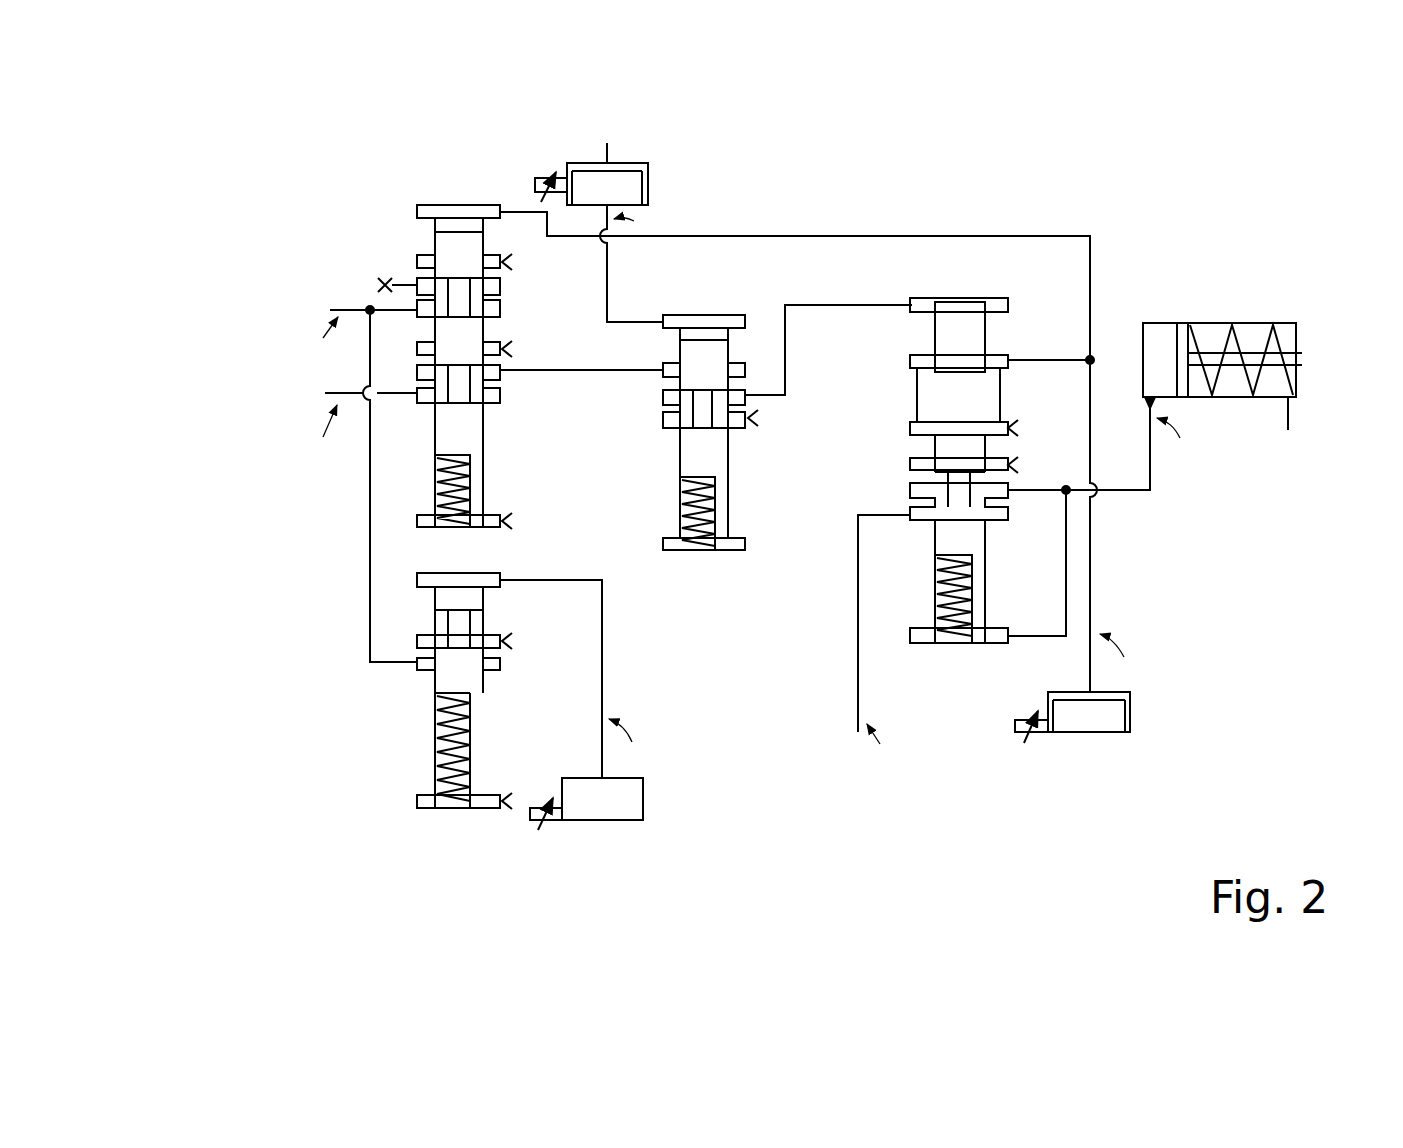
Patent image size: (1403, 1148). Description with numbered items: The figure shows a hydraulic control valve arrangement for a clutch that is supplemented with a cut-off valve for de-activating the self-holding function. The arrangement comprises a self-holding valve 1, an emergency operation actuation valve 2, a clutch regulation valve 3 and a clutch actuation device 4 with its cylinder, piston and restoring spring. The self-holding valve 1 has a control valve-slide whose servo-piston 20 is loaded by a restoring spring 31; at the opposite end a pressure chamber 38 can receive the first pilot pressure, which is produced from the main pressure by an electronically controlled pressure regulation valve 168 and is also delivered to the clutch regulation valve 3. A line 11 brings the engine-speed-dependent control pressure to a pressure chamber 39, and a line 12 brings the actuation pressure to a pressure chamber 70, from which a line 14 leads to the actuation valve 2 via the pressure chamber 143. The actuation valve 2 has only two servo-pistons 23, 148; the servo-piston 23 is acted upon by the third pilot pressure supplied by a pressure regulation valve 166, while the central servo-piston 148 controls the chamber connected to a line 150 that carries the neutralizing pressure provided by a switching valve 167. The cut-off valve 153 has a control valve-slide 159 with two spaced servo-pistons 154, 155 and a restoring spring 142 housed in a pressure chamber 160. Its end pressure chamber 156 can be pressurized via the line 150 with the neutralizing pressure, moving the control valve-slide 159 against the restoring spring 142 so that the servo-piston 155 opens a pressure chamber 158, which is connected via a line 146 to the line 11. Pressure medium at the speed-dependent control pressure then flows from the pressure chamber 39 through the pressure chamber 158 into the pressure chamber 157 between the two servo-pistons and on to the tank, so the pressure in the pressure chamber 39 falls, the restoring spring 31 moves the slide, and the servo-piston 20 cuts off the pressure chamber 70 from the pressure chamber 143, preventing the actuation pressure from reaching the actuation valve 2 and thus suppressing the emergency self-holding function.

The self-holding valve 1 is at (397, 376).
The emergency operation actuation valve 2 is at (785, 320).
The clutch regulation valve 3 is at (889, 430).
The clutch actuation device 4 is at (1232, 424).
The line 11 is at (350, 308).
The line 12 is at (330, 395).
The line 14 is at (563, 370).
The servo-piston 20 is at (452, 430).
The servo-piston 23 is at (700, 362).
The restoring spring 31 is at (445, 468).
The pressure chamber 38 is at (428, 207).
The pressure chamber 39 is at (495, 310).
The pressure chamber 70 is at (417, 393).
The restoring spring 142 is at (432, 700).
The pressure chamber 143 is at (417, 375).
The line 146 is at (370, 523).
The servo-piston 148 is at (697, 455).
The line 150 is at (602, 683).
The cut-off valve 153 is at (364, 738).
The servo-piston 154 is at (455, 593).
The servo-piston 155 is at (468, 673).
The pressure chamber 156 is at (420, 581).
The pressure chamber 157 is at (420, 640).
The pressure chamber 158 is at (420, 670).
The control valve-slide 159 is at (428, 692).
The pressure chamber 160 is at (428, 802).
The pressure regulation valve 166 is at (633, 163).
The switching valve 167 is at (627, 815).
The pressure regulation valve 168 is at (1098, 733).